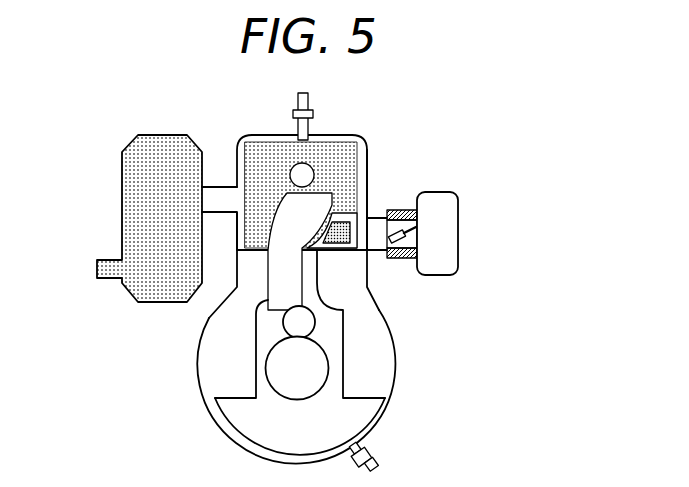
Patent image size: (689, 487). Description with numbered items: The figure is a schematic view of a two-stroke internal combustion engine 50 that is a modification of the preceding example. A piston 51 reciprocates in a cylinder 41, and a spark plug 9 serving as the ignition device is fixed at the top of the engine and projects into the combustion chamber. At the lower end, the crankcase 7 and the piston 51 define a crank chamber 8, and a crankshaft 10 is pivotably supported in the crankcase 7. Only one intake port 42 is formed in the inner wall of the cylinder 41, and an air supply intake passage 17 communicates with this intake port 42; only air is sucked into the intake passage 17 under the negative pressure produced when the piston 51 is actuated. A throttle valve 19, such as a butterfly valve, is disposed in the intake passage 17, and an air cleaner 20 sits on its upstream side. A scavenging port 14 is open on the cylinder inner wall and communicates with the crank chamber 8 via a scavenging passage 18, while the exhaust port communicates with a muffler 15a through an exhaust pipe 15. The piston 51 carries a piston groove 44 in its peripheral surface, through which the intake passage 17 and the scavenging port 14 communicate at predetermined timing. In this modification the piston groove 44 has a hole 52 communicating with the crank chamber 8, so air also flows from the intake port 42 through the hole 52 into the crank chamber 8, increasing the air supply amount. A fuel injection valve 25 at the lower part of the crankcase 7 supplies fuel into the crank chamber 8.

The engine 50 is at (272, 125).
The spark plug 9 is at (309, 102).
The scavenging port 14 is at (320, 200).
The cylinder 41 is at (368, 162).
The piston groove 44 is at (342, 208).
The intake passage 17 is at (398, 208).
The throttle valve 19 is at (400, 249).
The air cleaner 20 is at (461, 213).
The intake port 42 is at (368, 232).
The muffler 15a is at (165, 135).
The exhaust pipe 15 is at (217, 187).
The scavenging passage 18 is at (291, 238).
The piston 51 is at (256, 254).
The hole 52 is at (329, 236).
The crank chamber 8 is at (243, 363).
The crankcase 7 is at (207, 402).
The crankshaft 10 is at (297, 368).
The fuel injection valve 25 is at (380, 452).